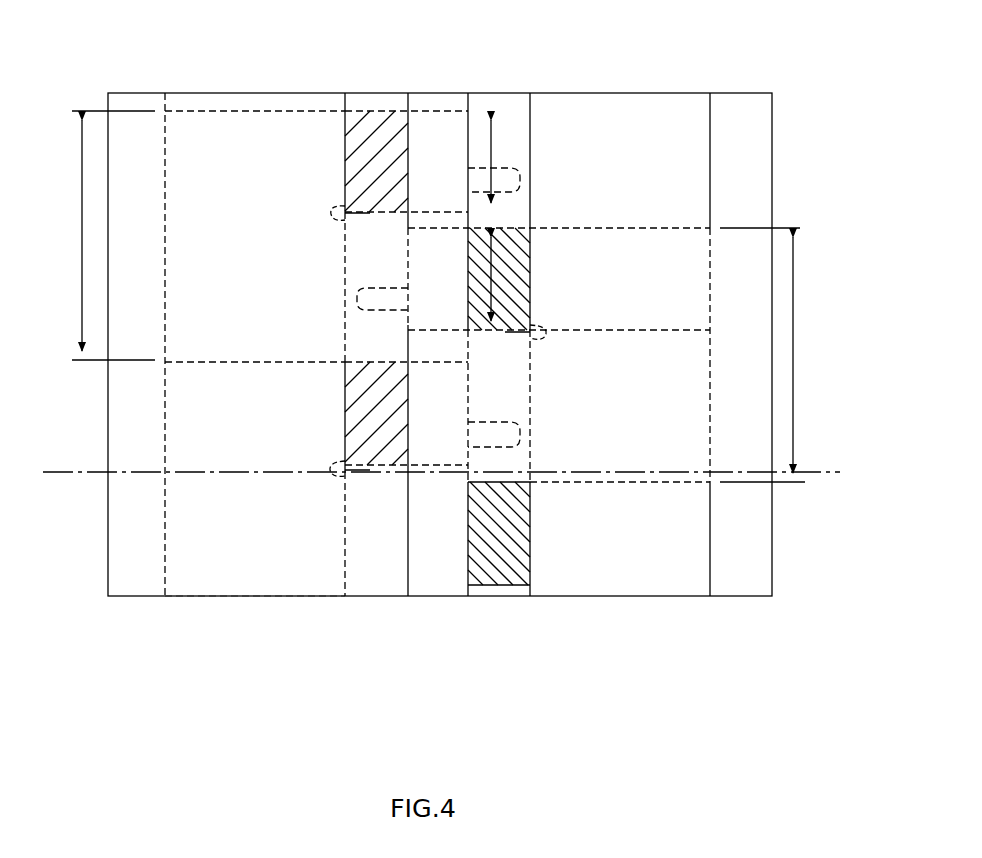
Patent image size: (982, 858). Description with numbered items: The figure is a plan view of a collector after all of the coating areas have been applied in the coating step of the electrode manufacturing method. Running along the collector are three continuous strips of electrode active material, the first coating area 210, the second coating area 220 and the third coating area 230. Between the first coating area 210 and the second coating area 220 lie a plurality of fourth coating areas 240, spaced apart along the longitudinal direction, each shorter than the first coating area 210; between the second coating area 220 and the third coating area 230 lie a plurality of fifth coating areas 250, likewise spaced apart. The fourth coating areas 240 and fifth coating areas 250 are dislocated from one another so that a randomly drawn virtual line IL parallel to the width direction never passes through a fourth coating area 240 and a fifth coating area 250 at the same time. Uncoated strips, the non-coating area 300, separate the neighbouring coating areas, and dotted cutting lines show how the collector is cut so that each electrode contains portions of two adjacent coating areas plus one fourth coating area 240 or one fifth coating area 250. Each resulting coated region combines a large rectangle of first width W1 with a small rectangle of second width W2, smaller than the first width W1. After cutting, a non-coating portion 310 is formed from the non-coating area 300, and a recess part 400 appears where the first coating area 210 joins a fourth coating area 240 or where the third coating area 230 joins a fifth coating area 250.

The first coating area 210 is at (250, 102).
The second coating area 220 is at (445, 100).
The third coating area 230 is at (626, 103).
The fourth coating area 240 is at (372, 110).
The fifth coating area 250 is at (530, 227).
The non-coating area 300 is at (378, 597).
The non-coating portion 310 is at (514, 181).
The recess part 400 is at (353, 215).
The virtual line IL is at (60, 465).
The first width W1 is at (437, 296).
The second width W2 is at (506, 220).